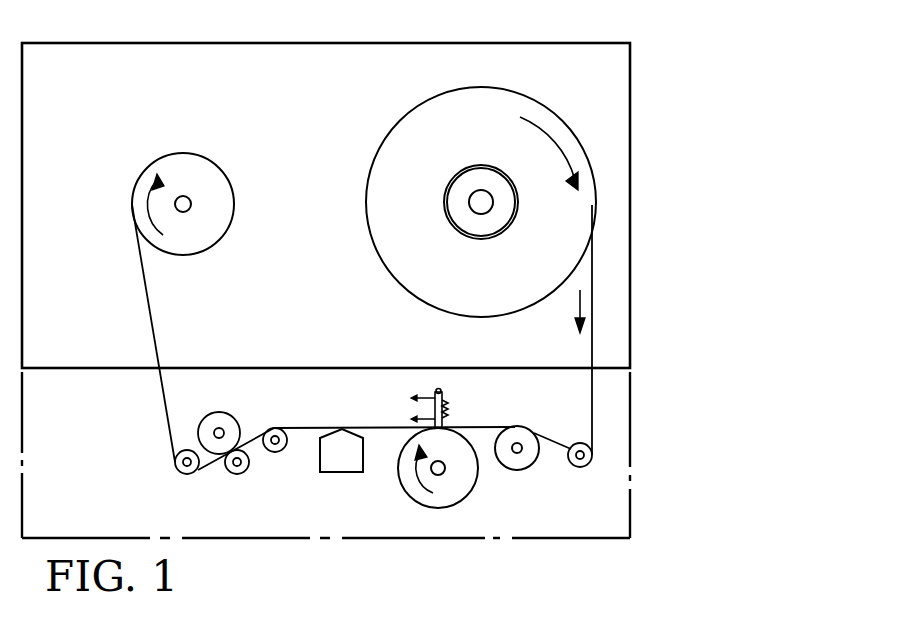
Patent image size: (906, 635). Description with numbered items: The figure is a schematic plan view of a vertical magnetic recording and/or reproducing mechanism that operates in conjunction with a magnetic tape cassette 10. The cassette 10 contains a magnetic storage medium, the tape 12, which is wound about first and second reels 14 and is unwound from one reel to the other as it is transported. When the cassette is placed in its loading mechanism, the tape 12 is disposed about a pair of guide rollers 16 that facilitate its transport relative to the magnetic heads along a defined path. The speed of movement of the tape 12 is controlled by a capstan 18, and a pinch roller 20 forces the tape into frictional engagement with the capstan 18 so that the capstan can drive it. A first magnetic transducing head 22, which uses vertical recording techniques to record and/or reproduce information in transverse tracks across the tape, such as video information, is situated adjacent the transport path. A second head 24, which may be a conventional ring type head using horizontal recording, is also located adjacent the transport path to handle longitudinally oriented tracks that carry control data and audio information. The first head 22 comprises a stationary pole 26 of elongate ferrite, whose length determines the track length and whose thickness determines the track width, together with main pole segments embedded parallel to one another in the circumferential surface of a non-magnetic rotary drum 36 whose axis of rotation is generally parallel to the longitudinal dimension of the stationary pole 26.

The magnetic tape cassette 10 is at (562, 76).
The tape 12 is at (150, 317).
The first and second reels 14 is at (382, 180).
The guide rollers 16 is at (176, 465).
The capstan 18 is at (239, 472).
The pinch roller 20 is at (226, 424).
The first magnetic transducing head 22 is at (452, 419).
The second head 24 is at (338, 463).
The stationary pole 26 is at (438, 388).
The rotary drum 36 is at (455, 492).